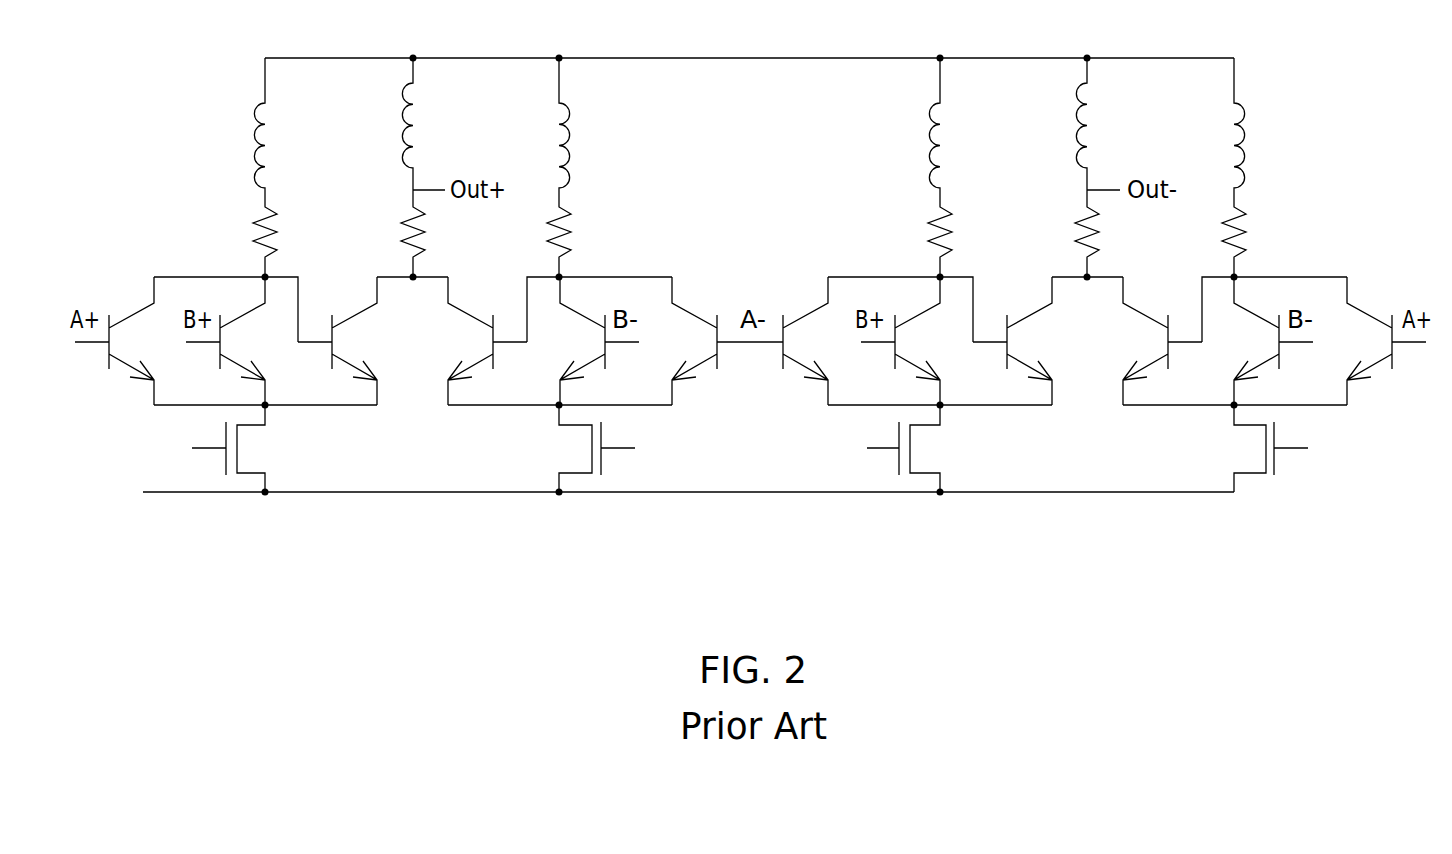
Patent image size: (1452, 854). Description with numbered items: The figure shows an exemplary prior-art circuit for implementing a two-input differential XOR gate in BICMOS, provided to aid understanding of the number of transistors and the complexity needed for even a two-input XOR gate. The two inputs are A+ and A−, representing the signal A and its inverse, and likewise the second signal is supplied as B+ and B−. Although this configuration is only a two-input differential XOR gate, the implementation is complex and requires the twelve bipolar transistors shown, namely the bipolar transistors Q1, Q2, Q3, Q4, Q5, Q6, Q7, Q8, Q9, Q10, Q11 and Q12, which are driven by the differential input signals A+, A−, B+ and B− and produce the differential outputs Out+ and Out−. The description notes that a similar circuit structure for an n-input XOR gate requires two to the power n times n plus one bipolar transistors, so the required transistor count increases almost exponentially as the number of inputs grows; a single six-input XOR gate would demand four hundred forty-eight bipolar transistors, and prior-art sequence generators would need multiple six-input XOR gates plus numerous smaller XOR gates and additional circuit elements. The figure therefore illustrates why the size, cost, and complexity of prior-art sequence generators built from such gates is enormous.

The transistor Q1 is at (114, 341).
The transistor Q2 is at (225, 341).
The transistor Q3 is at (337, 341).
The transistor Q4 is at (487, 341).
The transistor Q5 is at (599, 341).
The transistor Q6 is at (727, 341).
The transistor Q7 is at (805, 341).
The transistor Q8 is at (900, 341).
The transistor Q9 is at (1012, 341).
The transistor Q10 is at (1158, 341).
The transistor Q11 is at (1261, 341).
The transistor Q12 is at (1374, 341).